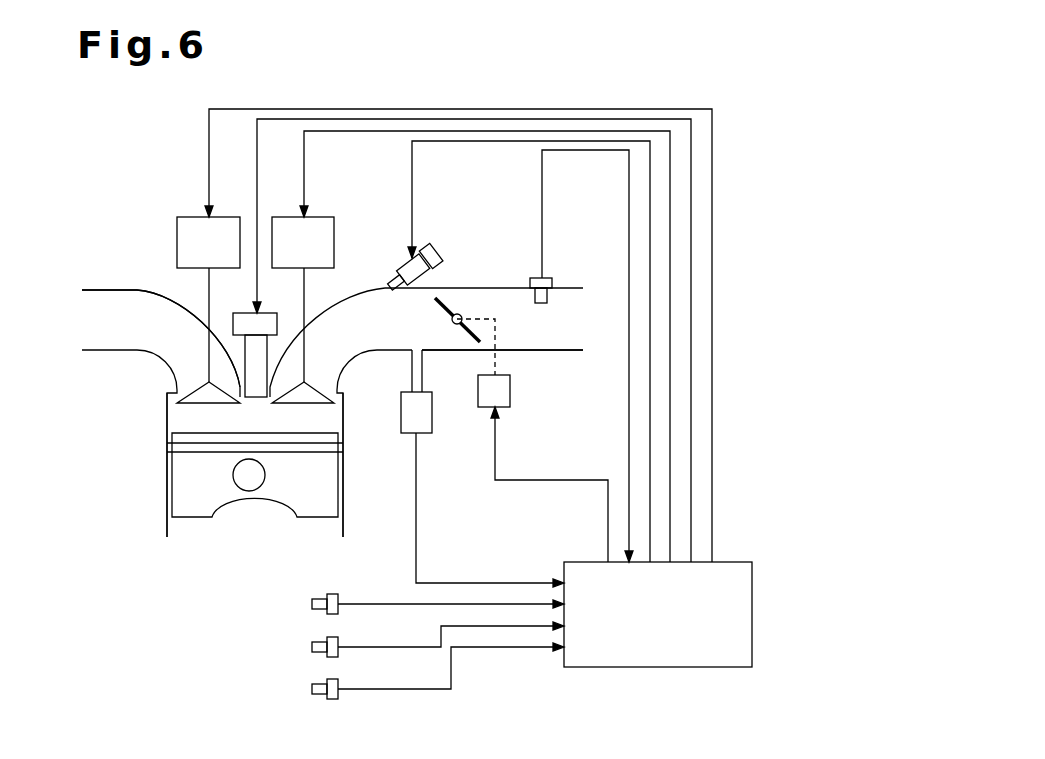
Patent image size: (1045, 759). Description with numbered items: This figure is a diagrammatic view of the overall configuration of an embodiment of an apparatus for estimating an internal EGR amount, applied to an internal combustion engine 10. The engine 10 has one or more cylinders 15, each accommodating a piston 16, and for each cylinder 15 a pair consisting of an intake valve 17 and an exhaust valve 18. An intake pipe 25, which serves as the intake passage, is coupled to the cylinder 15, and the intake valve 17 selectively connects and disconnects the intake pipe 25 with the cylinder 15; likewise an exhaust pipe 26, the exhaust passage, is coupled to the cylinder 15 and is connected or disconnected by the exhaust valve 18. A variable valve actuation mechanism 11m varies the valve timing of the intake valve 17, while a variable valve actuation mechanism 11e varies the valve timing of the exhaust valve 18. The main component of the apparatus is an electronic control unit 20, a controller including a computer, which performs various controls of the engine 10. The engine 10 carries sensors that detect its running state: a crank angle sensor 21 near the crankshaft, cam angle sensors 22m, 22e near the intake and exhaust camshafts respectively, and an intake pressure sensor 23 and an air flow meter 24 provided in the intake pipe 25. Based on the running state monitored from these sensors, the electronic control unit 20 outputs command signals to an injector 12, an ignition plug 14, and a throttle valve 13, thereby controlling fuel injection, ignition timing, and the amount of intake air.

The internal combustion engine 10 is at (146, 453).
The variable valve actuation mechanism 11e is at (193, 212).
The variable valve actuation mechanism 11m is at (334, 227).
The injector 12 is at (442, 258).
The throttle valve 13 is at (452, 303).
The ignition plug 14 is at (207, 300).
The cylinder 15 is at (343, 507).
The piston 16 is at (325, 478).
The intake valve 17 is at (303, 303).
The exhaust valve 18 is at (207, 350).
The electronic control unit 20 is at (705, 667).
The crank angle sensor 21 is at (322, 595).
The cam angle sensor 22m is at (322, 637).
The cam angle sensor 22e is at (322, 680).
The intake pressure sensor 23 is at (433, 418).
The air flow meter 24 is at (553, 283).
The intake pipe 25 is at (542, 351).
The exhaust pipe 26 is at (112, 288).